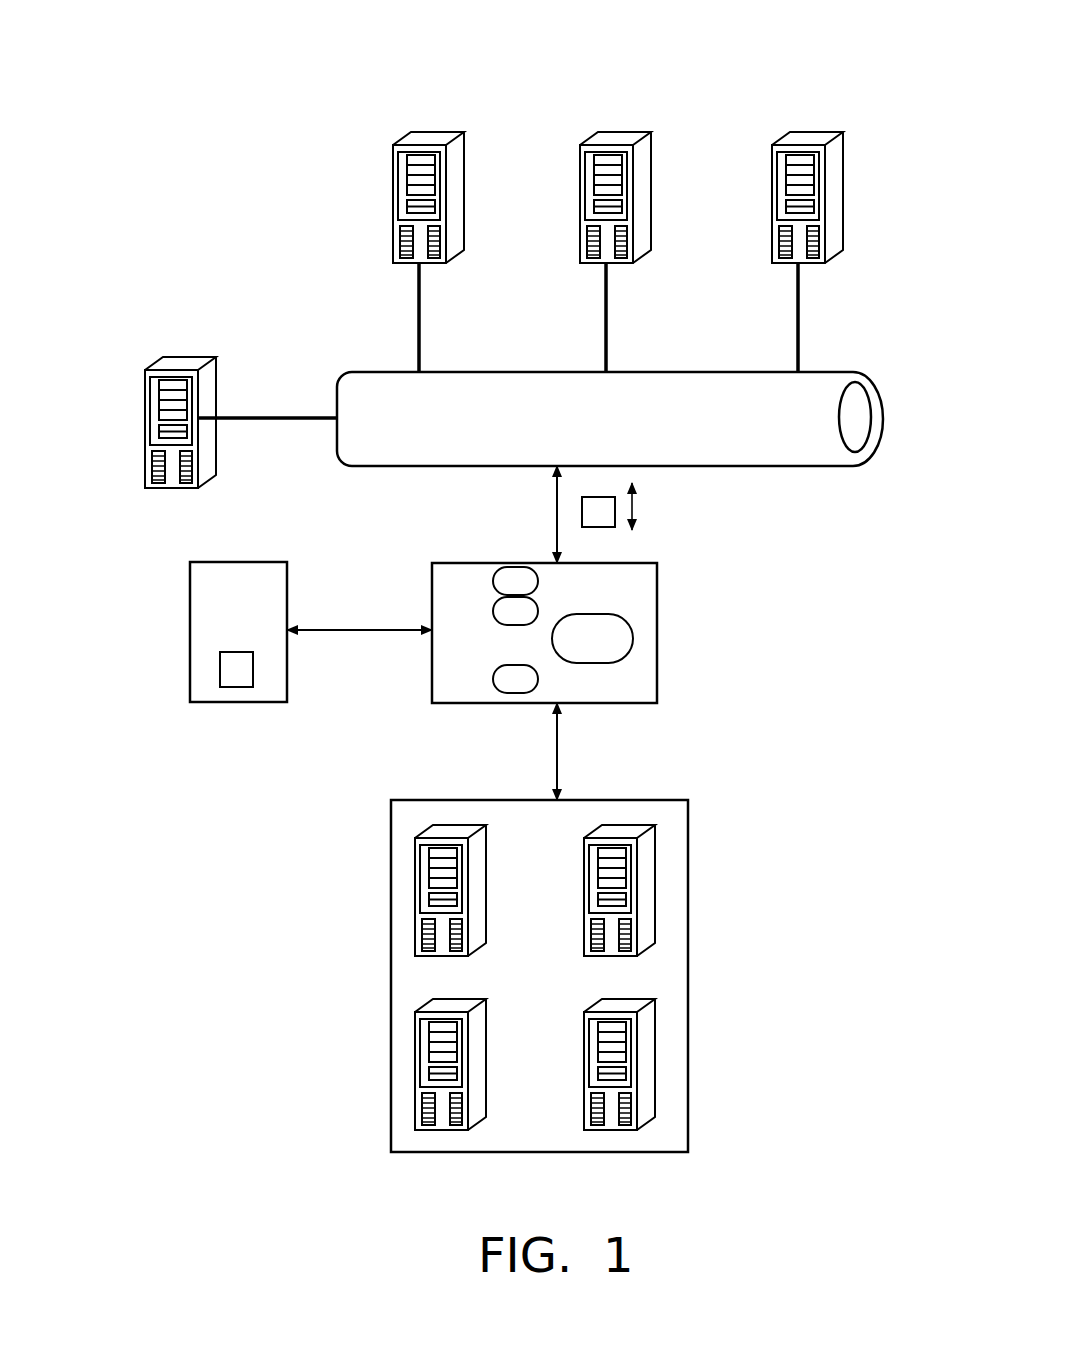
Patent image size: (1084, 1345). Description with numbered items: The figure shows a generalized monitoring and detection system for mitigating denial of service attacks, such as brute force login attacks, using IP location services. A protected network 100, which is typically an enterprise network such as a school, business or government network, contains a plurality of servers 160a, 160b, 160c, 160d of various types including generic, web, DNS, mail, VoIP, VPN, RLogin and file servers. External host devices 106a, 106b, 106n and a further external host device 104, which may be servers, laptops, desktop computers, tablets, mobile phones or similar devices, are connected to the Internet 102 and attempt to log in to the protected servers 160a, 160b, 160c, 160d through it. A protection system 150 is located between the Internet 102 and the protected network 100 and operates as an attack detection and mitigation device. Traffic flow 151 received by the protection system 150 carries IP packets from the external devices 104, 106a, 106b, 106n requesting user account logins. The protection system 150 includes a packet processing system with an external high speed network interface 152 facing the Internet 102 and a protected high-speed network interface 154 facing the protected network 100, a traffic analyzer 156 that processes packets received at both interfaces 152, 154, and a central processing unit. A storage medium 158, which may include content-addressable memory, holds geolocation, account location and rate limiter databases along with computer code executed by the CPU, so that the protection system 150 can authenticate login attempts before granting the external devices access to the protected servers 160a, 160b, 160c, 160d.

The protected network 100 is at (670, 798).
The Internet 102 is at (838, 371).
The external host device 104 is at (188, 357).
The external host device 106a is at (440, 131).
The external host device 106b is at (627, 131).
The external host device 106n is at (819, 131).
The protection system 150 is at (575, 617).
The traffic flow 151 is at (599, 497).
The external high speed network interface 152 is at (520, 567).
The protected high-speed network interface 154 is at (510, 693).
The traffic analyzer 156 is at (493, 608).
The storage medium 158 is at (190, 598).
The server 160a is at (415, 887).
The server 160b is at (415, 1070).
The server 160c is at (656, 873).
The server 160d is at (656, 1055).